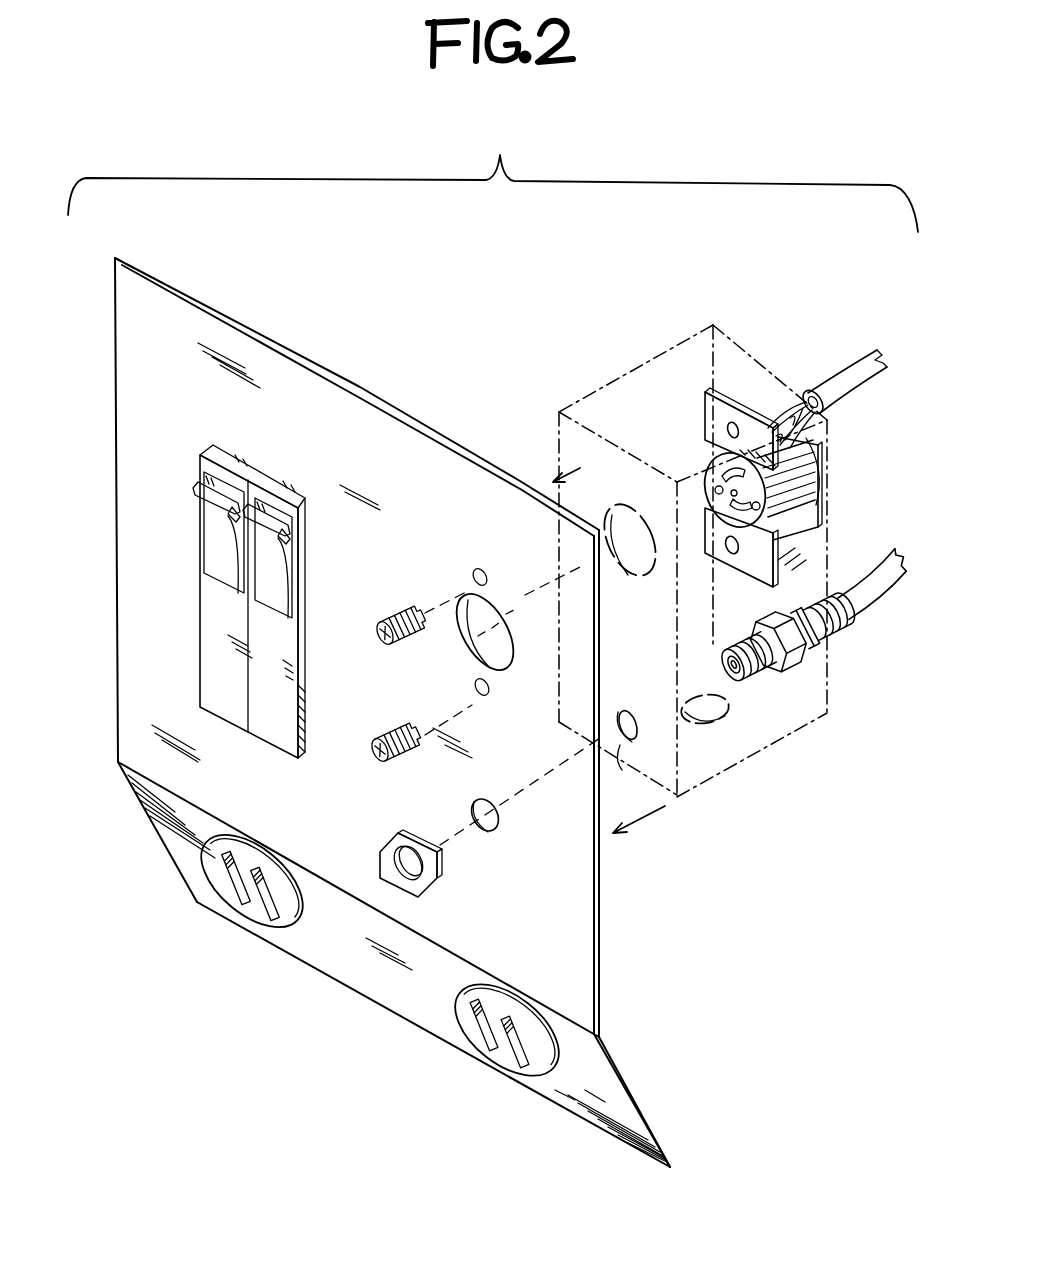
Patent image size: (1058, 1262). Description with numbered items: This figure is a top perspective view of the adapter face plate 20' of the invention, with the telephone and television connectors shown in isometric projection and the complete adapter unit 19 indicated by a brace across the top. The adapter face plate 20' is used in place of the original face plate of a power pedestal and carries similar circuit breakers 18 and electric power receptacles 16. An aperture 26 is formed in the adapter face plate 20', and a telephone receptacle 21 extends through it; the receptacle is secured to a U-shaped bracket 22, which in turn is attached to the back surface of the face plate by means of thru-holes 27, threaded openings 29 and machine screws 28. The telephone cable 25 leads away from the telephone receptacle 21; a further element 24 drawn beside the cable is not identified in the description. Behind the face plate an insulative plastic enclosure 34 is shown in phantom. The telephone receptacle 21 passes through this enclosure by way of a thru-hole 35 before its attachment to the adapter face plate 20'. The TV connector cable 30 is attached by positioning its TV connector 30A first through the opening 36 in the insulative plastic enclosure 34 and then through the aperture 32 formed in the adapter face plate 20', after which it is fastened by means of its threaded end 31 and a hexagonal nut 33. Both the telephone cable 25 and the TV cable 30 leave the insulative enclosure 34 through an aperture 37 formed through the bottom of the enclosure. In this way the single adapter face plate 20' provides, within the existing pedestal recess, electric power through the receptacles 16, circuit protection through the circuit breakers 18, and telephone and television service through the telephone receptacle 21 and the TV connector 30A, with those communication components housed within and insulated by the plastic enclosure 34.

The electric power receptacles 16 is at (480, 1048).
The circuit breakers 18 is at (196, 470).
The adapter unit 19 is at (514, 148).
The adapter face plate 20' is at (392, 717).
The telephone receptacle 21 is at (710, 492).
The U-shaped bracket 22 is at (700, 408).
The wires 24 is at (790, 412).
The telephone cable 25 is at (858, 358).
The aperture 26 is at (500, 664).
The thru-holes 27 is at (476, 576).
The machine screws 28 is at (392, 740).
The threaded openings 29 is at (736, 428).
The TV connector cable 30 is at (858, 607).
The TV connector 30A is at (750, 676).
The threaded end 31 is at (760, 677).
The aperture 32 is at (492, 827).
The hexagonal nut 33 is at (435, 895).
The insulative plastic enclosure 34 is at (645, 362).
The thru-hole 35 is at (612, 508).
The opening 36 is at (628, 755).
The aperture 37 is at (655, 672).